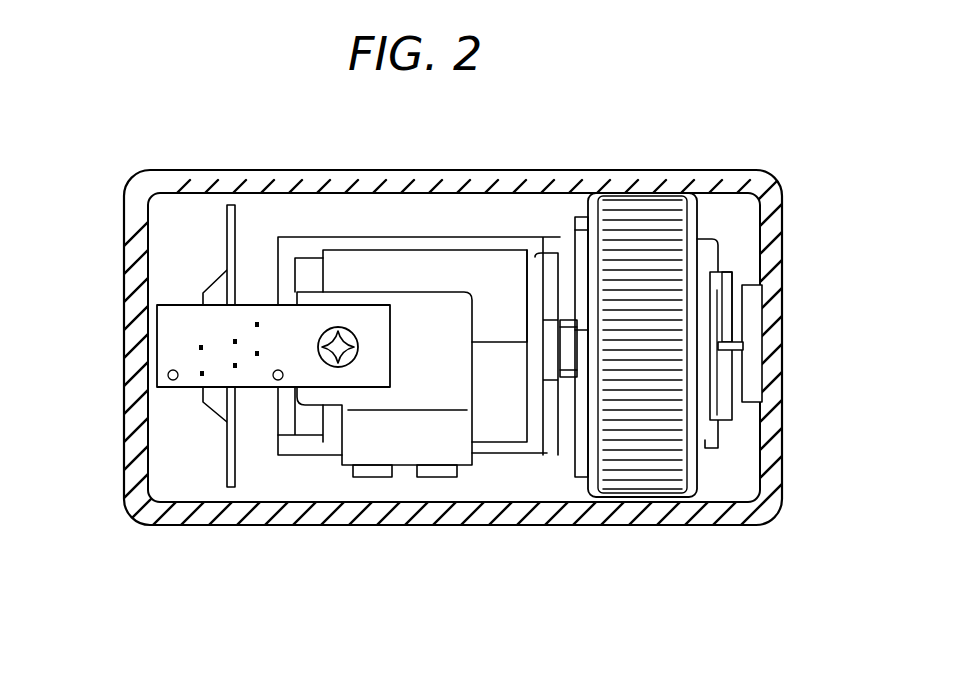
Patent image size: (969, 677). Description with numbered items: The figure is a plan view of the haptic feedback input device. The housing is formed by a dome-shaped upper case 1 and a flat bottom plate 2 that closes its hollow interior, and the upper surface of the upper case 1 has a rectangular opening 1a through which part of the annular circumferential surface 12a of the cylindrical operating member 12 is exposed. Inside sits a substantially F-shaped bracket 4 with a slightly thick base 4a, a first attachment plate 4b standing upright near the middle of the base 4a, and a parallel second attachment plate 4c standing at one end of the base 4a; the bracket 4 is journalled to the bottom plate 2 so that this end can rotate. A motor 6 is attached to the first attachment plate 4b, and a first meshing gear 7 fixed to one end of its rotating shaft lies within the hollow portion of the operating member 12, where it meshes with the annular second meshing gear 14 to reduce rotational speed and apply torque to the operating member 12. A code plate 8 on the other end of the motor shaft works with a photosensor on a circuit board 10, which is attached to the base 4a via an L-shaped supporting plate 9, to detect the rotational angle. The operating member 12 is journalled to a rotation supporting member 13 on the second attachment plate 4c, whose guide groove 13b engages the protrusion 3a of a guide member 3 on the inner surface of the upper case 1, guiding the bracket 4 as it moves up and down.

The upper case 1 is at (197, 527).
The opening 1a is at (689, 192).
The bottom plate 2 is at (160, 448).
The guide member 3 is at (767, 375).
The protrusion 3a is at (740, 340).
The bracket 4 is at (507, 457).
The base 4a is at (313, 447).
The first attachment plate 4b is at (552, 445).
The second attachment plate 4c is at (706, 443).
The motor 6 is at (434, 249).
The first meshing gear 7 is at (568, 343).
The code plate 8 is at (225, 257).
The L-shaped supporting plate 9 is at (412, 447).
The circuit board 10 is at (170, 345).
The operating member 12 is at (698, 223).
The circumferential surface 12a is at (642, 208).
The rotation supporting member 13 is at (731, 269).
The guide groove 13b is at (734, 274).
The second meshing gear 14 is at (583, 222).